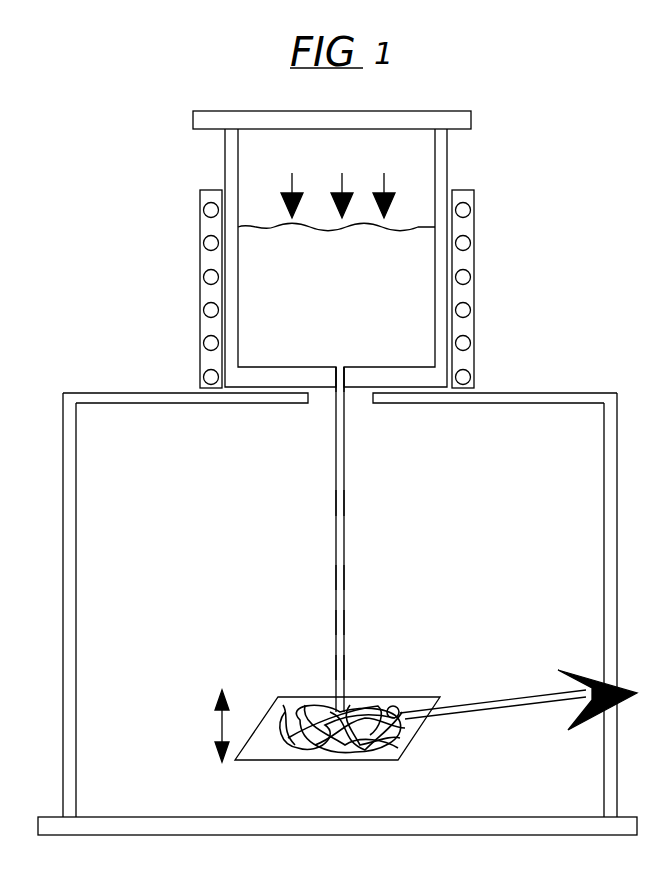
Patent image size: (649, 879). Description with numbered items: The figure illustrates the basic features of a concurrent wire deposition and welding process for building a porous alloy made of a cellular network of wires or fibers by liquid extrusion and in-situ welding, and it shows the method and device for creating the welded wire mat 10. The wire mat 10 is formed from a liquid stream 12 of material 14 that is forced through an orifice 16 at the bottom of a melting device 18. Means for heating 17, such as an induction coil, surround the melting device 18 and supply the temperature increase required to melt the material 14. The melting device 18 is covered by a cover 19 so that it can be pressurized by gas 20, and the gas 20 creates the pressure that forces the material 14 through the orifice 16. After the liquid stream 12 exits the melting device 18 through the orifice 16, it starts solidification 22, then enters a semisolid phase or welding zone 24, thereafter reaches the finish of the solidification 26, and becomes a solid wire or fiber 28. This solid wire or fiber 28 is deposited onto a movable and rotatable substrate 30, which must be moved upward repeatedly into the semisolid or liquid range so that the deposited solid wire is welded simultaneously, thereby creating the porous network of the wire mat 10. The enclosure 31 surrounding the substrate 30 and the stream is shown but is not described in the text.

The welded wire mat 10 is at (280, 747).
The liquid stream 12 is at (347, 468).
The material 14 is at (420, 285).
The orifice 16 is at (338, 380).
The means for heating 17 is at (199, 300).
The melting device 18 is at (438, 350).
The cover 19 is at (462, 121).
The gas 20 is at (338, 178).
The start of solidification 22 is at (335, 503).
The welding zone 24 is at (347, 578).
The finish of solidification 26 is at (335, 622).
The solid wire or fiber 28 is at (346, 665).
The substrate 30 is at (418, 722).
The chamber 31 is at (80, 773).